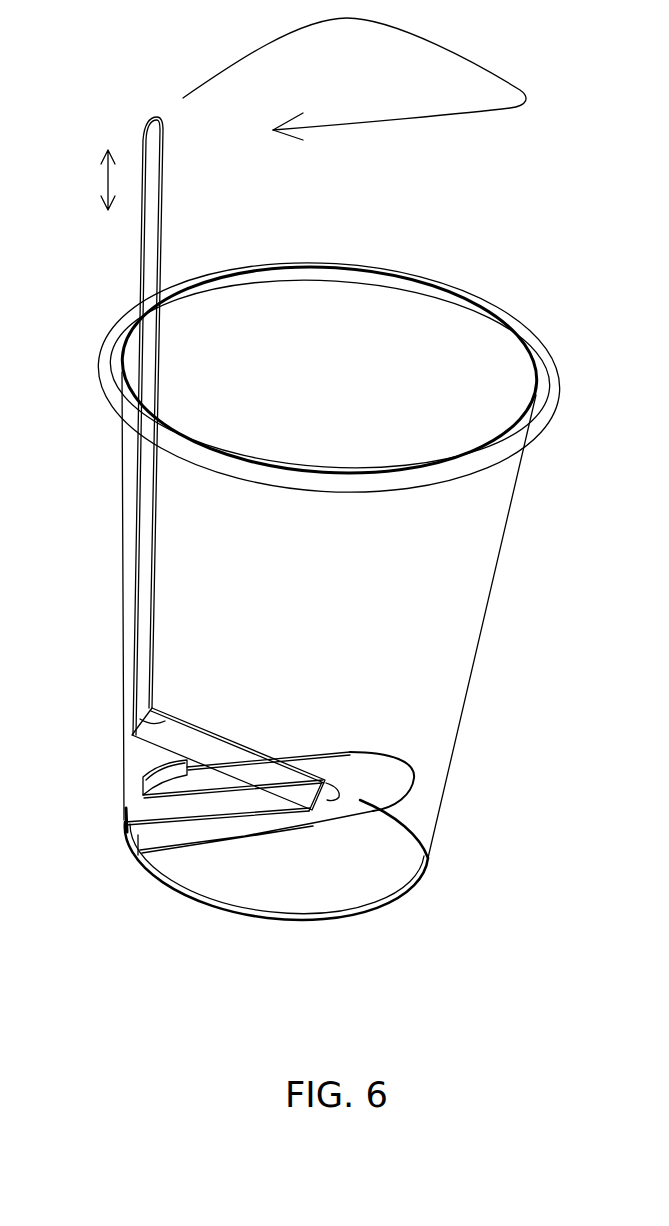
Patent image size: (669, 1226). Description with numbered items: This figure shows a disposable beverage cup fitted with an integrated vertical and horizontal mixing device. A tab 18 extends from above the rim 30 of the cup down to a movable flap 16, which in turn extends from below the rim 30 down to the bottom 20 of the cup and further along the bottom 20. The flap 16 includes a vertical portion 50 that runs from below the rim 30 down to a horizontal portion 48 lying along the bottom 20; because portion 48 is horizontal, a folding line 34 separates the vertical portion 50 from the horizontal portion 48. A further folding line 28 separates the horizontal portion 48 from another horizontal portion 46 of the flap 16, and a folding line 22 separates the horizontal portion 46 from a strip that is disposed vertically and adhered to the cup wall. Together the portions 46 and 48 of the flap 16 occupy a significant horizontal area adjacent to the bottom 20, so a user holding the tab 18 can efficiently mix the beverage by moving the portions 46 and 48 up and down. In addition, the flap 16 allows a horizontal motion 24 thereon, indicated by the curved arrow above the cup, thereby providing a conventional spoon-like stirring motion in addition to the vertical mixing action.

The movable flap 16 is at (231, 526).
The tab 18 is at (111, 426).
The bottom 20 is at (330, 864).
The folding line 22 is at (158, 770).
The horizontal motion 24 is at (510, 72).
The folding line 28 is at (337, 797).
The rim 30 is at (378, 282).
The folding line 34 is at (168, 716).
The horizontal portion 46 is at (378, 780).
The horizontal portion 48 is at (228, 753).
The vertical portion 50 is at (146, 581).